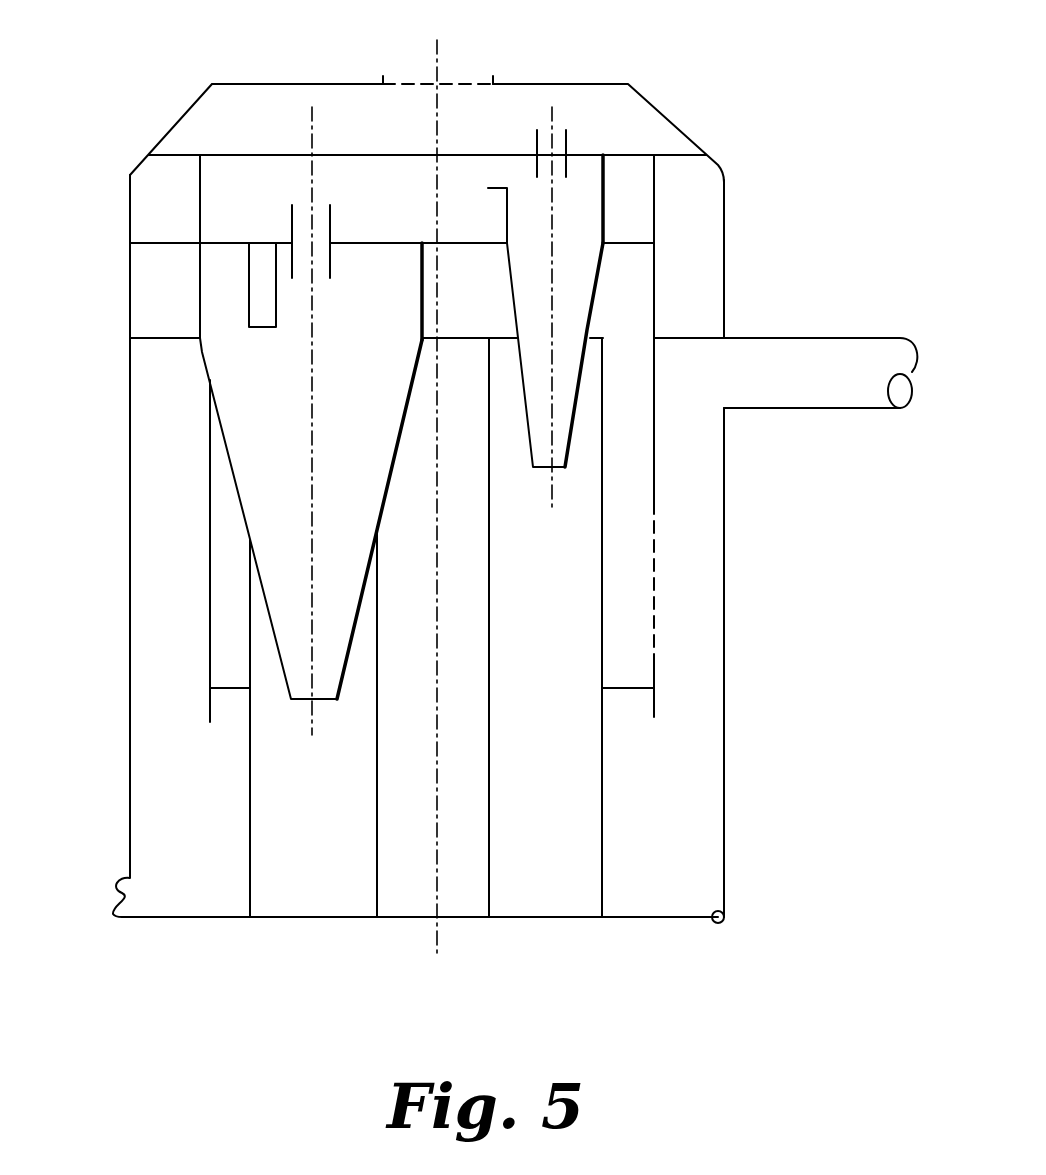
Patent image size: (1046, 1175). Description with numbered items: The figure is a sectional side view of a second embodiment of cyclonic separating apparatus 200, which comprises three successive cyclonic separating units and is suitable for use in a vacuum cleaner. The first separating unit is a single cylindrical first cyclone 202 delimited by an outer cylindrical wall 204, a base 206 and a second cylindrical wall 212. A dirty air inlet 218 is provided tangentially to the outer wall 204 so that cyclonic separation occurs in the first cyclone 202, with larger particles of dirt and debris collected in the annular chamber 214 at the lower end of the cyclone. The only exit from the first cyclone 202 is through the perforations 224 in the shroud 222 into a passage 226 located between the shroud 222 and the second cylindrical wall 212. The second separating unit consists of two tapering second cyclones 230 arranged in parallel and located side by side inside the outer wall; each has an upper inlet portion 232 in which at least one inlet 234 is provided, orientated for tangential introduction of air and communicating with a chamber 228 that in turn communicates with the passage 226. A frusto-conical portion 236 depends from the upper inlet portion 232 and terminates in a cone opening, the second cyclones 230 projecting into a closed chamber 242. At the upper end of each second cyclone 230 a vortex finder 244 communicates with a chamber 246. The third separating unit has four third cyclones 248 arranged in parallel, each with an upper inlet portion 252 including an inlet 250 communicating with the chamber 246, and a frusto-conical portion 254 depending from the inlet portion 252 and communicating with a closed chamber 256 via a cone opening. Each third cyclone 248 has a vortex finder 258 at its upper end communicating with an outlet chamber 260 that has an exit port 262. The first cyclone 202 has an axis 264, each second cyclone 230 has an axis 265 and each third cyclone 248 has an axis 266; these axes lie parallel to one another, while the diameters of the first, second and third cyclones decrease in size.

The cyclonic separating apparatus 200 is at (431, 508).
The first cyclone 202 is at (707, 685).
The outer cylindrical wall 204 is at (127, 763).
The base 206 is at (183, 917).
The second cylindrical wall 212 is at (602, 823).
The annular chamber 214 is at (203, 869).
The dirty air inlet 218 is at (818, 365).
The shroud 222 is at (655, 468).
The perforations 224 is at (654, 583).
The passage 226 is at (225, 507).
The chamber 228 is at (498, 307).
The second cyclone 230 is at (203, 358).
The upper inlet portion 232 is at (417, 305).
The inlet 234 is at (278, 318).
The frusto-conical portion 236 is at (391, 470).
The closed chamber 242 is at (335, 875).
The vortex finder 244 is at (332, 230).
The chamber 246 is at (415, 193).
The third cyclone 248 is at (580, 233).
The inlet 250 is at (500, 180).
The upper inlet portion 252 is at (605, 180).
The frusto-conical portion 254 is at (597, 282).
The closed chamber 256 is at (560, 865).
The vortex finder 258 is at (570, 145).
The outlet chamber 260 is at (280, 107).
The exit port 262 is at (453, 84).
The axis 264 is at (435, 940).
The axis 265 is at (313, 577).
The axis 266 is at (550, 483).